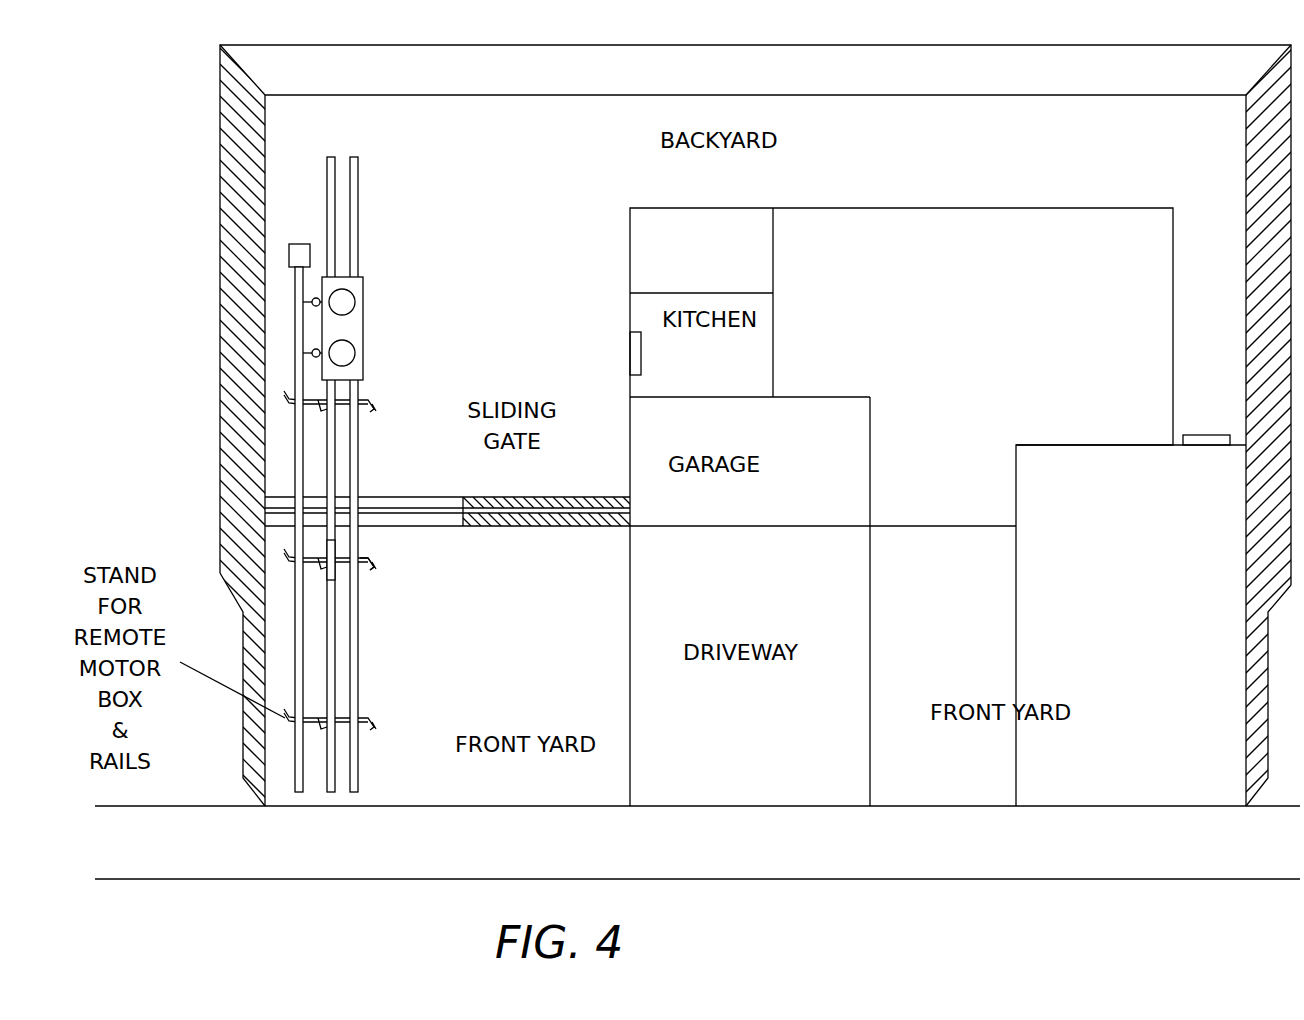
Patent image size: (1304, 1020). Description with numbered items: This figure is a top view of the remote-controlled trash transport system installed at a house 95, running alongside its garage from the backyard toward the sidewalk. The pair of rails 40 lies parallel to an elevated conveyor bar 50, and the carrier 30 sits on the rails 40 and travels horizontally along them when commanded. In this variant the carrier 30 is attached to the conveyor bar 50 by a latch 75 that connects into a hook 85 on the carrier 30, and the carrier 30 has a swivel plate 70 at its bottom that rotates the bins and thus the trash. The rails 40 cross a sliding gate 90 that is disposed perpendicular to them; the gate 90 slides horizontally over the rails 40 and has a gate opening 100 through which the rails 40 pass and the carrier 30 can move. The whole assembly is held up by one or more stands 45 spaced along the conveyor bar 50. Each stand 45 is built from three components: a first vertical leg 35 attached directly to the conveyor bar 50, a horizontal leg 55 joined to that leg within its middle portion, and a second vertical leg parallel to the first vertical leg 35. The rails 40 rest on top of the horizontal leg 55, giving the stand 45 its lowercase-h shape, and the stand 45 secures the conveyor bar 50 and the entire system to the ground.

The carrier 30 is at (396, 329).
The first vertical leg 35 is at (300, 400).
The pair of rails 40 is at (362, 173).
The stand for rails 45 is at (376, 575).
The conveyor bar 50 is at (295, 325).
The horizontal leg 55 is at (341, 565).
The swivel plate 70 is at (358, 356).
The latch 75 is at (297, 352).
The hook 85 is at (318, 292).
The gate 90 is at (449, 516).
The house 95 is at (792, 816).
The gate opening 100 is at (540, 511).